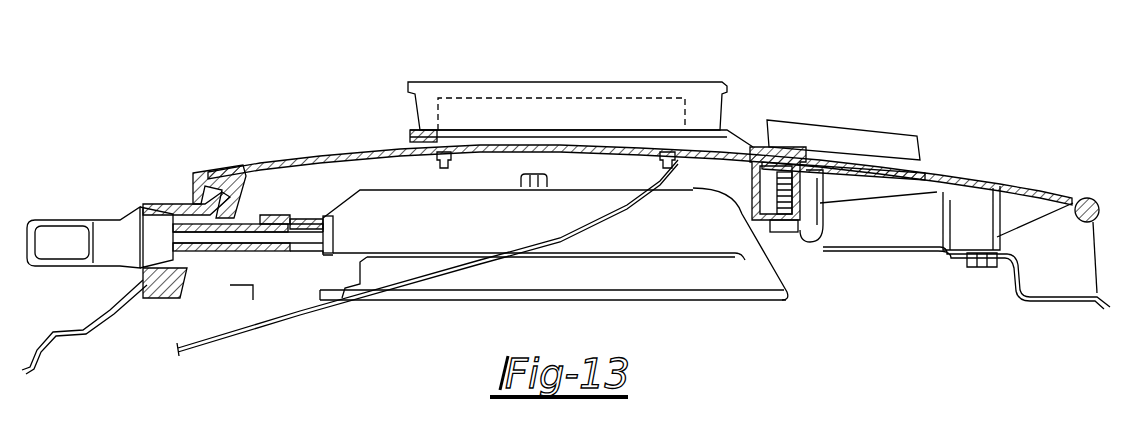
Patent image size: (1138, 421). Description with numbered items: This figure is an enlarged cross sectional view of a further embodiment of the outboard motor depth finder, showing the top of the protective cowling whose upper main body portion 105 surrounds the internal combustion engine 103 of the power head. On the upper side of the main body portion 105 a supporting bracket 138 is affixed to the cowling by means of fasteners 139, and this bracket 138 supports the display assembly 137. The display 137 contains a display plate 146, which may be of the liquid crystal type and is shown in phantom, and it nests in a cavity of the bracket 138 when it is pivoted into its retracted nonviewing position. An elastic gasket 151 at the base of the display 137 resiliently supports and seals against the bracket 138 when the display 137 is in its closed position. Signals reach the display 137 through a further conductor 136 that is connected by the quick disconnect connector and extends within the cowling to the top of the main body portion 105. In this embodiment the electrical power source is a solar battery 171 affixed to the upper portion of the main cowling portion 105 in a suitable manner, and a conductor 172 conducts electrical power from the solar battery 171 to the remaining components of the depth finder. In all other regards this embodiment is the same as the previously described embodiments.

The internal combustion engine 103 is at (792, 268).
The upper main body portion 105 is at (295, 157).
The further conductor 136 is at (277, 313).
The display assembly 137 is at (520, 83).
The supporting bracket 138 is at (578, 142).
The fasteners 139 is at (448, 165).
The display plate 146 is at (615, 90).
The elastic gasket 151 is at (430, 132).
The solar battery 171 is at (853, 140).
The conductor 172 is at (745, 135).